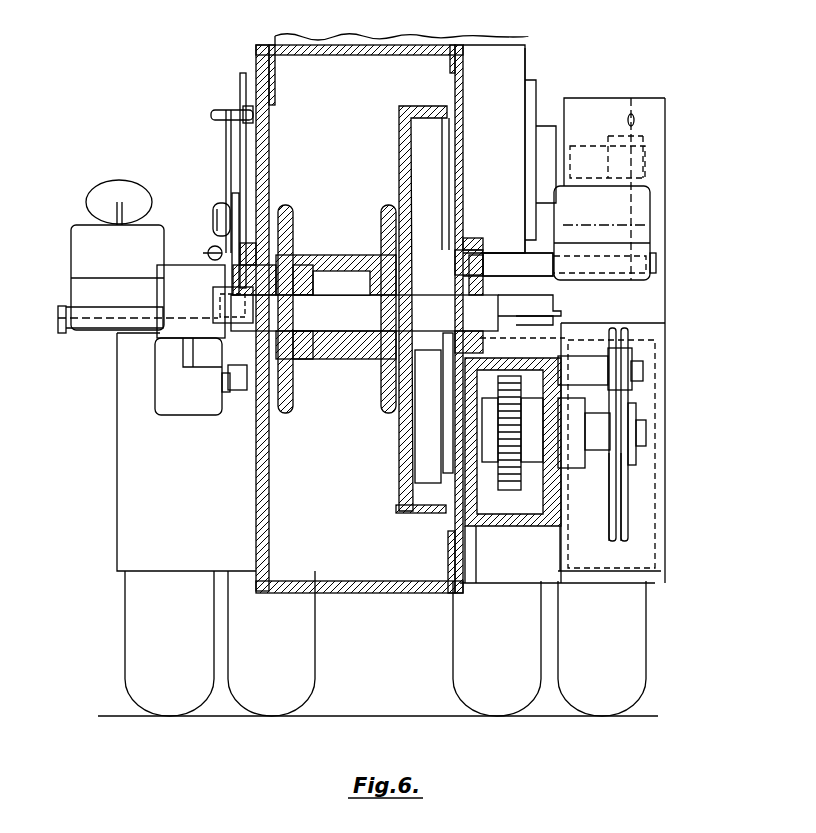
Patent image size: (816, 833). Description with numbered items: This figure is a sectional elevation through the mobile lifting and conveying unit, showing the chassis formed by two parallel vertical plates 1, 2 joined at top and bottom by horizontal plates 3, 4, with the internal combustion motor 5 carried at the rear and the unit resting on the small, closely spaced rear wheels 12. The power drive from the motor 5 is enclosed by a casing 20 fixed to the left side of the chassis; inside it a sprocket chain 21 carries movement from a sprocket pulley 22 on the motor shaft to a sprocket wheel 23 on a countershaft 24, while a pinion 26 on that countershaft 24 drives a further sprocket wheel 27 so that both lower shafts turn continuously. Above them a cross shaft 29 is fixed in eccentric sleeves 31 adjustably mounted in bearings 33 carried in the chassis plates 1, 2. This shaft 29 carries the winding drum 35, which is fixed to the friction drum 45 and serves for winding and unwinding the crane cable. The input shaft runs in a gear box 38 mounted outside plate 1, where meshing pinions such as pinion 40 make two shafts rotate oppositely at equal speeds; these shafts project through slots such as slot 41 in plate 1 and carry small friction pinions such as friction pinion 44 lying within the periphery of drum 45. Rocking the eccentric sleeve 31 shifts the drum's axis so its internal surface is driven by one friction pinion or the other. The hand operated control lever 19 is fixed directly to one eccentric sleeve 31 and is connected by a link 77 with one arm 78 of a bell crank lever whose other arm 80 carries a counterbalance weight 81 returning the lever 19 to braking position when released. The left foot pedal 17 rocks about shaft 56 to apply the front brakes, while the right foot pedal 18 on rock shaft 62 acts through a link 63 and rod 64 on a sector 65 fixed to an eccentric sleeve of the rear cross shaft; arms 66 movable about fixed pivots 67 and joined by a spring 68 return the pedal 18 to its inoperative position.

The vertical plate 1 is at (457, 563).
The vertical plate 2 is at (253, 492).
The horizontal plate 3 is at (322, 52).
The horizontal plate 4 is at (300, 578).
The internal combustion motor 5 is at (518, 50).
The rear wheels 12 is at (462, 632).
The left foot pedal 17 is at (640, 188).
The right foot pedal 18 is at (88, 245).
The hand operated control lever 19 is at (237, 80).
The casing 20 is at (652, 318).
The sprocket chain 21 is at (645, 222).
The sprocket pulley 22 is at (630, 112).
The sprocket wheel 23 is at (628, 487).
The countershaft 24 is at (643, 427).
The pinion 26 is at (608, 460).
The sprocket wheel 27 is at (604, 515).
The cross shaft 29 is at (352, 318).
The eccentric sleeve 31 is at (282, 262).
The bearing 33 is at (265, 225).
The drum 35 is at (315, 262).
The gear box 38 is at (538, 520).
The pinion 40 is at (508, 487).
The slot 41 is at (428, 480).
The friction pinion 44 is at (412, 447).
The friction drum 45 is at (400, 505).
The shaft 56 is at (655, 262).
The rock shaft 62 is at (58, 322).
The link 63 is at (212, 290).
The rod 64 is at (212, 208).
The sector 65 is at (240, 205).
The arm 66 is at (222, 390).
The fixed pivot 67 is at (245, 383).
The spring 68 is at (205, 246).
The link 77 is at (210, 112).
The arm 78 is at (223, 150).
The arm 80 is at (190, 360).
The counterbalance weight 81 is at (194, 412).